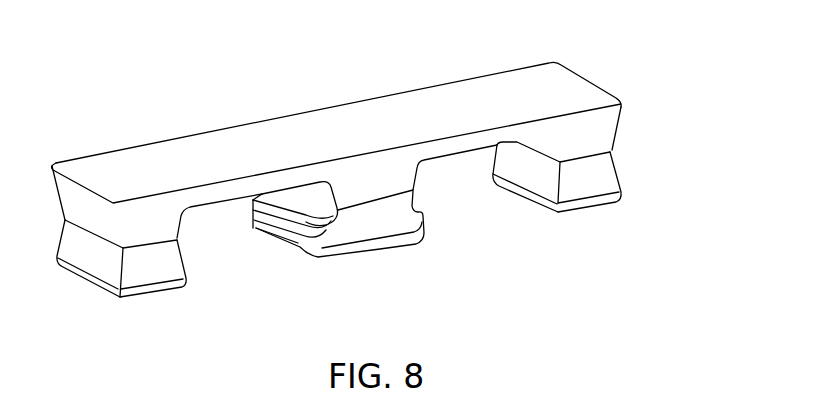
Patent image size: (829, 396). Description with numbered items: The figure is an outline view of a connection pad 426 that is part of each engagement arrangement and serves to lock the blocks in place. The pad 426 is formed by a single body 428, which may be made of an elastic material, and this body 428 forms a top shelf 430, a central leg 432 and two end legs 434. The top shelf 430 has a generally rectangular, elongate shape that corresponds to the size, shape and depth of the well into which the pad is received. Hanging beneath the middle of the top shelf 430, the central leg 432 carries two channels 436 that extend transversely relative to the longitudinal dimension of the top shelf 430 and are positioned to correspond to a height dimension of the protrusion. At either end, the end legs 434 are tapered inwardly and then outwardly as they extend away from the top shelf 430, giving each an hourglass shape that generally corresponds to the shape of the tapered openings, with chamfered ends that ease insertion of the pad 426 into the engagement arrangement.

The pad 426 is at (378, 186).
The body 428 is at (337, 164).
The top shelf 430 is at (562, 89).
The central leg 432 is at (360, 228).
The end legs 434 is at (148, 275).
The channels 436 is at (306, 216).